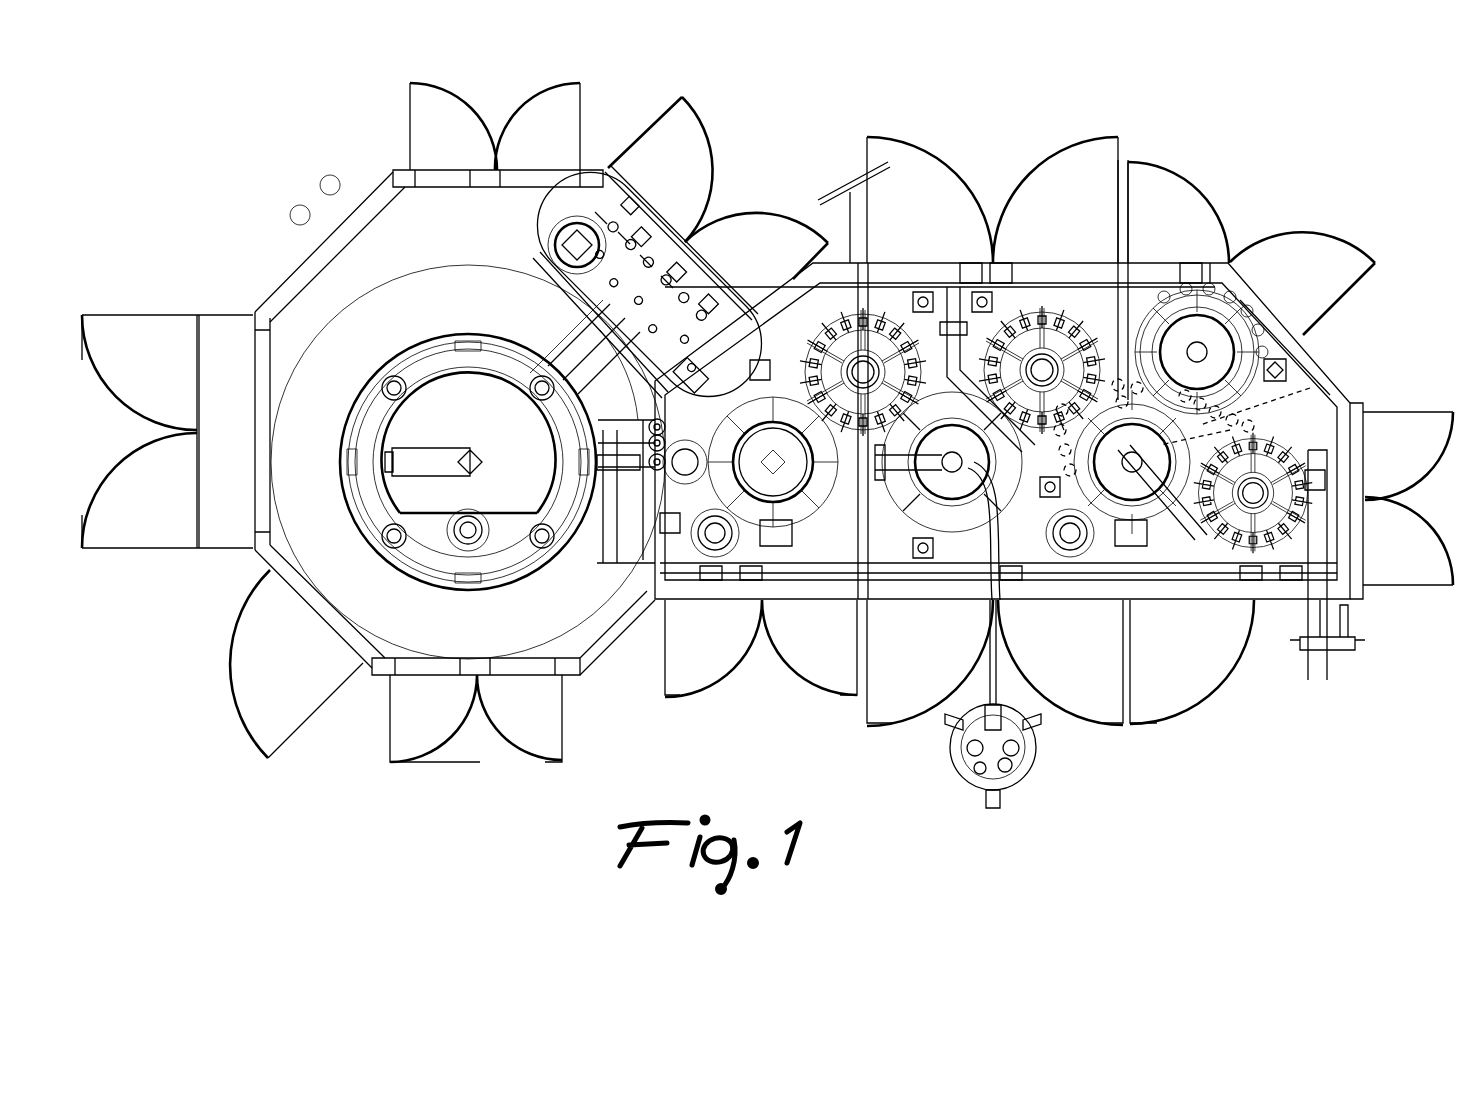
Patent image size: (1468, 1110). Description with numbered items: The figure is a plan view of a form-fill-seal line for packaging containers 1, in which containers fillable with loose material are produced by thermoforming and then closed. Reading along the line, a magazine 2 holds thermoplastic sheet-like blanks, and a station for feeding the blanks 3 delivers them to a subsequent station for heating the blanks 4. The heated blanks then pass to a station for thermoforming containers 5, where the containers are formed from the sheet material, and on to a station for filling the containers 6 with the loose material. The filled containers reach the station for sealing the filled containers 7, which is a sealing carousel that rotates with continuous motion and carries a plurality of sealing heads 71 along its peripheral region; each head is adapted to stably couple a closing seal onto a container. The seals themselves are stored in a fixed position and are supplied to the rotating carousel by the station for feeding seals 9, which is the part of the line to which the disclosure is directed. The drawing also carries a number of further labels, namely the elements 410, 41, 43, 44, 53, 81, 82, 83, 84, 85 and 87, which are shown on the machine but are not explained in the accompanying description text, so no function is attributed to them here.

The line for packaging containers 1 is at (1246, 156).
The magazine 2 is at (638, 233).
The station for feeding the blanks 3 is at (613, 257).
The station for heating the blanks 4 is at (382, 280).
The housing of rinsing module 410 is at (340, 312).
The rinsing carousel 41 is at (380, 562).
The transfer guide 43 is at (590, 328).
The transfer star 44 is at (652, 480).
The station for thermoforming containers 5 is at (783, 486).
The filling carousel ring 53 is at (733, 463).
The station for filling the containers 6 is at (960, 490).
The station for sealing the filled containers 7 is at (1147, 488).
The sealing heads 71 is at (1122, 378).
The transfer wheel 81 is at (688, 468).
The first star wheel 82 is at (893, 300).
The second star wheel 83 is at (1062, 300).
The outlet star wheel 84 is at (1285, 568).
The valve 85 is at (1317, 620).
The pump unit 87 is at (1012, 778).
The station for feeding seals 9 is at (1216, 330).